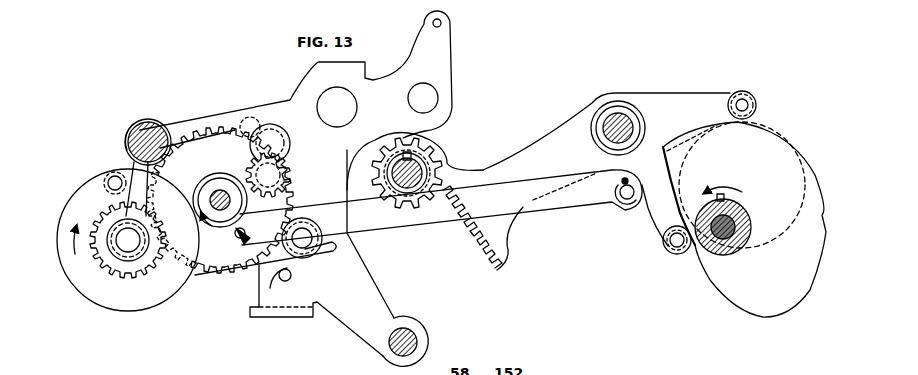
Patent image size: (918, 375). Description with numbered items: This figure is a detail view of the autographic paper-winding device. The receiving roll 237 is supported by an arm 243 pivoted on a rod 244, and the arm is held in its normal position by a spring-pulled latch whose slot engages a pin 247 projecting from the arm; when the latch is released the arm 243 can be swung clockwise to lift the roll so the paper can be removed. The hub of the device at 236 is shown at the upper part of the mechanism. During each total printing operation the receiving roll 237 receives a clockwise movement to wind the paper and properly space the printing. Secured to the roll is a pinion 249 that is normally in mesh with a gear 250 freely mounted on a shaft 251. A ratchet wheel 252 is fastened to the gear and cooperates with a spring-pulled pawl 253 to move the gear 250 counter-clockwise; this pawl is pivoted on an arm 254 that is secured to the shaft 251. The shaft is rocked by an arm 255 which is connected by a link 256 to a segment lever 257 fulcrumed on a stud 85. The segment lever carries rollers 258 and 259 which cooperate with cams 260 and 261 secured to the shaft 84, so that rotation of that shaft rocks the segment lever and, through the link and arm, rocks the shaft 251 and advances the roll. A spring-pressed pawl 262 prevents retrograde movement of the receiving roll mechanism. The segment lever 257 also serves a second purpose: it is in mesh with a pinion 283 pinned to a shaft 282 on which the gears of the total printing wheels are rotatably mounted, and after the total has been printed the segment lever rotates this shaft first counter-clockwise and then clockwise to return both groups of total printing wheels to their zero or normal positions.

The shaft 84 is at (738, 250).
The stud 85 is at (614, 118).
The drive shaft 236 is at (156, 124).
The receiving roll 237 is at (114, 274).
The arm 243 is at (128, 166).
The rod 244 is at (134, 138).
The pin 247 is at (106, 181).
The pinion 249 is at (138, 274).
The gear 250 is at (283, 180).
The shaft 251 is at (220, 210).
The ratchet wheel 252 is at (280, 190).
The spring-pulled pawl 253 is at (255, 128).
The arm 254 is at (284, 148).
The arm 255 is at (237, 244).
The link 256 is at (389, 222).
The segment lever 257 is at (558, 140).
The roller 258 is at (670, 250).
The roller 259 is at (752, 101).
The cam 260 is at (722, 285).
The cam 261 is at (788, 160).
The spring-pressed pawl 262 is at (316, 287).
The shaft 282 is at (418, 162).
The pinion 283 is at (406, 139).